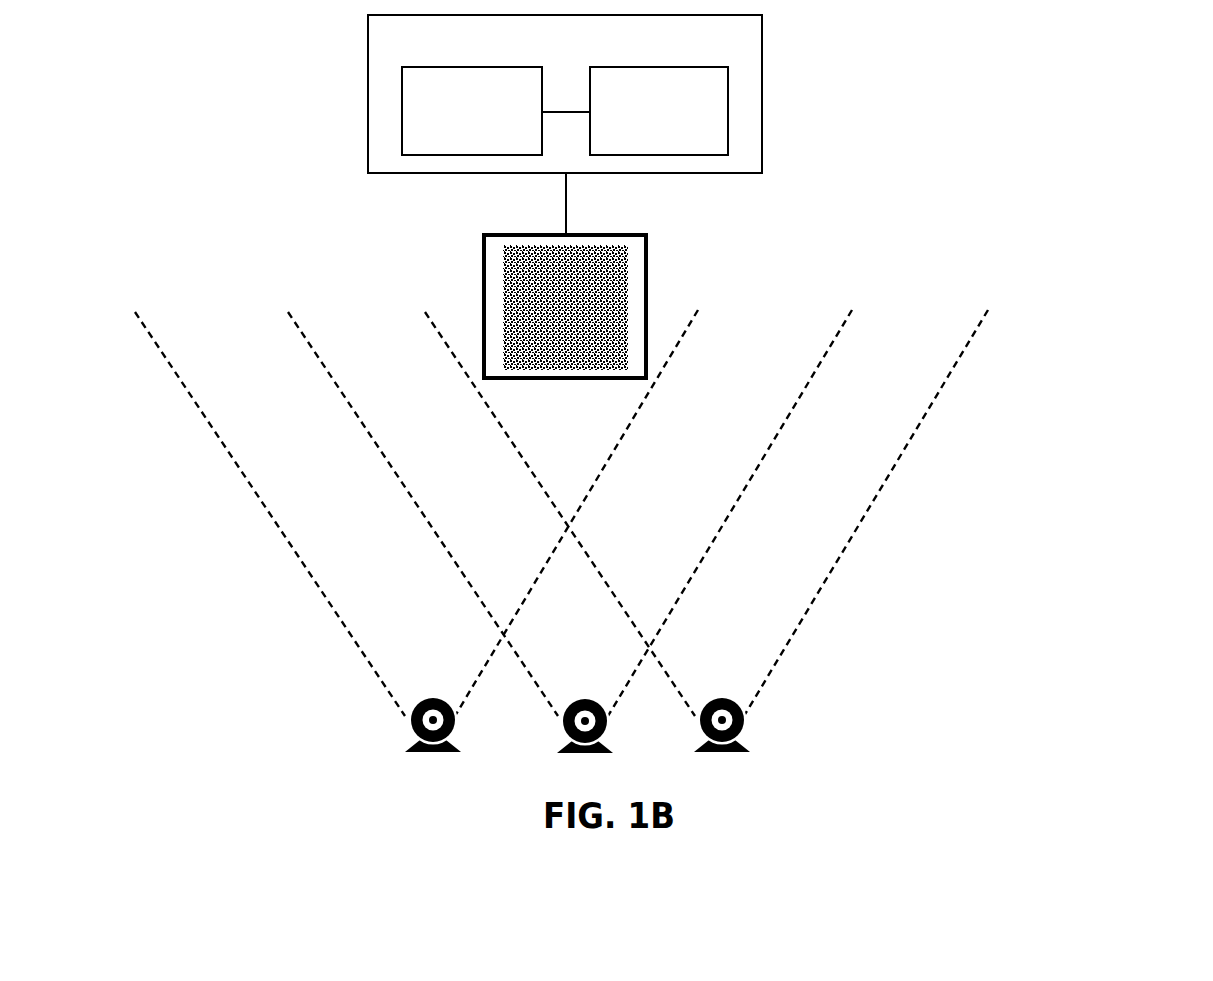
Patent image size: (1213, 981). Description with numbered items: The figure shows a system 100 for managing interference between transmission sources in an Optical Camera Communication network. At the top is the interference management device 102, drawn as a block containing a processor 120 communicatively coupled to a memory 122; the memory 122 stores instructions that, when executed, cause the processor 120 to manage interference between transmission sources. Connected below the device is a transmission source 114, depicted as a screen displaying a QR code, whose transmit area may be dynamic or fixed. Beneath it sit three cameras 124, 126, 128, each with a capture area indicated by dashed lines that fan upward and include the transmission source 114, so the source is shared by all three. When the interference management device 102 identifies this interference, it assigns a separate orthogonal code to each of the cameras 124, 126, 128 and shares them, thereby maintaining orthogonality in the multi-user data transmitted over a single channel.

The system 100 is at (1057, 82).
The interference management device 102 is at (565, 124).
The transmission source 114 is at (648, 275).
The processor 120 is at (659, 111).
The memory 122 is at (472, 111).
The camera 124 is at (461, 751).
The camera 126 is at (613, 751).
The camera 128 is at (750, 751).